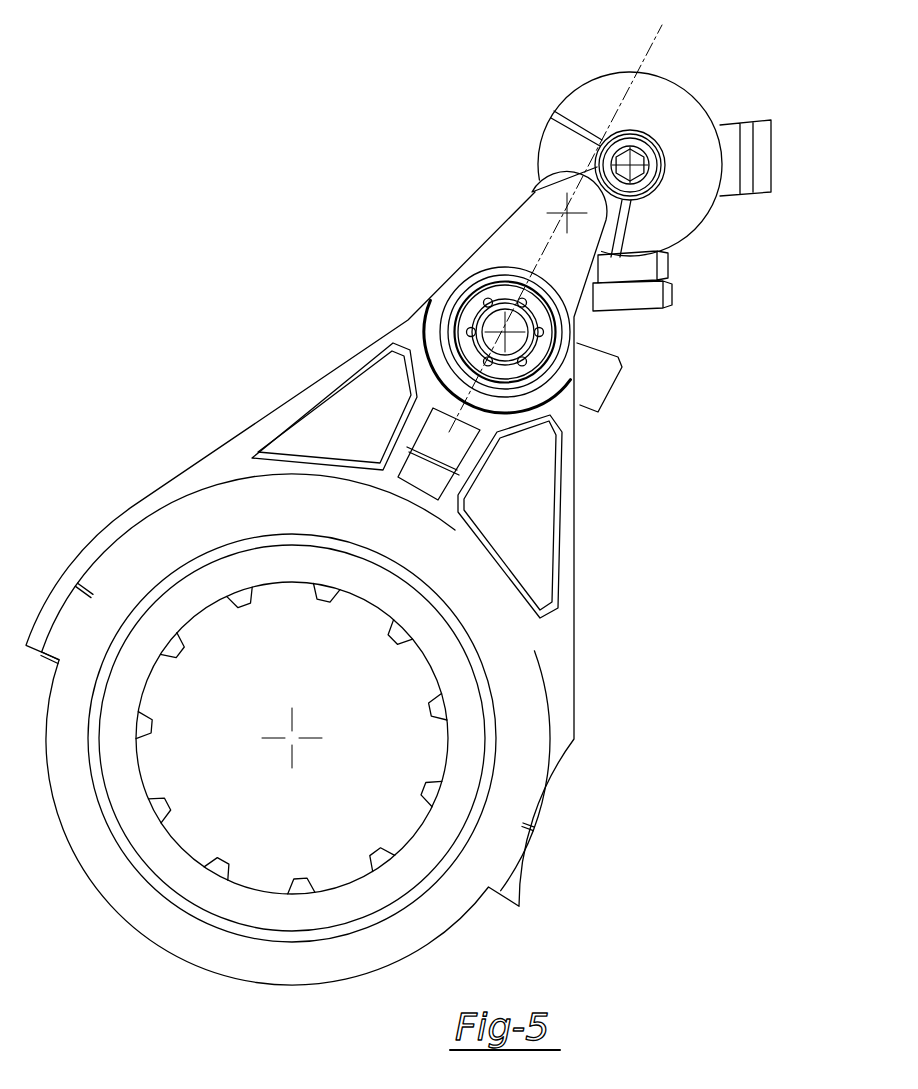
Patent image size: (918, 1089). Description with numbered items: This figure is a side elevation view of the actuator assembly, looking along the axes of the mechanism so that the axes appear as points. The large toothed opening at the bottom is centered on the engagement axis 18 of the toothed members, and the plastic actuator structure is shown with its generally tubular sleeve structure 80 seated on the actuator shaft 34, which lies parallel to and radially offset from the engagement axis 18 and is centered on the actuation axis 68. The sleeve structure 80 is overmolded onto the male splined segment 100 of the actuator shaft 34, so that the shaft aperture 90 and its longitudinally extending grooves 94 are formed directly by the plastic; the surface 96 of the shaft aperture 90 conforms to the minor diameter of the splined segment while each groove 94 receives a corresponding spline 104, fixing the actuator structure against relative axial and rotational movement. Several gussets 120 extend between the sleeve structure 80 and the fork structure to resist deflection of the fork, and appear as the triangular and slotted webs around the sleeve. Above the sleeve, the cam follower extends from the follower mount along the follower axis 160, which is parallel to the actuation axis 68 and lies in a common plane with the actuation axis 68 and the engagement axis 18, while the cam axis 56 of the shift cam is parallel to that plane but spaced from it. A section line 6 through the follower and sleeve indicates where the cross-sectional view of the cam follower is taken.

The section line 6- 6 is at (657, 20).
The engagement axis 18 is at (298, 742).
The actuator shaft 34 is at (497, 328).
The cam axis 56 is at (667, 170).
The actuation axis 68 is at (535, 358).
The sleeve structure 80 is at (502, 268).
The shaft aperture 90 is at (443, 322).
The surface of the shaft aperture 96 is at (518, 312).
The grooves 94 is at (522, 330).
The male splined segment 100 is at (560, 397).
The splines 104 is at (490, 338).
The gussets 120 is at (405, 437).
The follower axis 160 is at (627, 212).